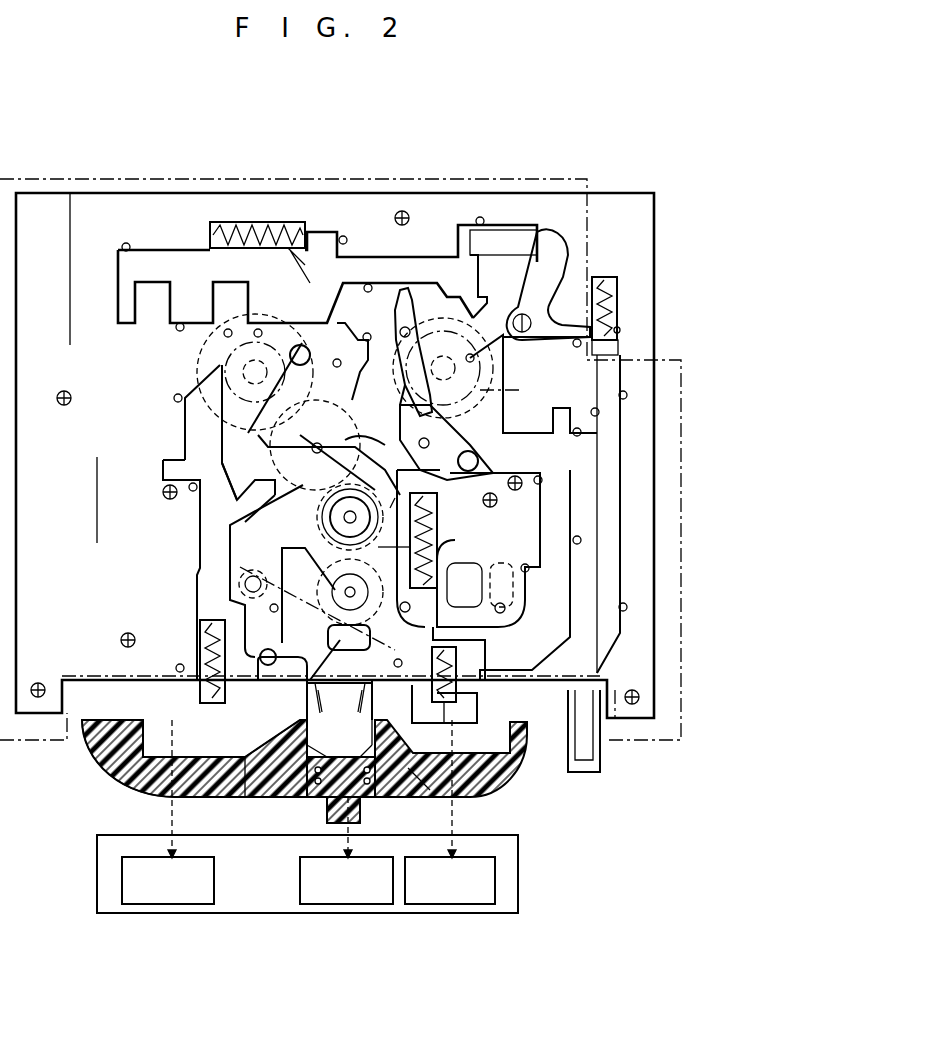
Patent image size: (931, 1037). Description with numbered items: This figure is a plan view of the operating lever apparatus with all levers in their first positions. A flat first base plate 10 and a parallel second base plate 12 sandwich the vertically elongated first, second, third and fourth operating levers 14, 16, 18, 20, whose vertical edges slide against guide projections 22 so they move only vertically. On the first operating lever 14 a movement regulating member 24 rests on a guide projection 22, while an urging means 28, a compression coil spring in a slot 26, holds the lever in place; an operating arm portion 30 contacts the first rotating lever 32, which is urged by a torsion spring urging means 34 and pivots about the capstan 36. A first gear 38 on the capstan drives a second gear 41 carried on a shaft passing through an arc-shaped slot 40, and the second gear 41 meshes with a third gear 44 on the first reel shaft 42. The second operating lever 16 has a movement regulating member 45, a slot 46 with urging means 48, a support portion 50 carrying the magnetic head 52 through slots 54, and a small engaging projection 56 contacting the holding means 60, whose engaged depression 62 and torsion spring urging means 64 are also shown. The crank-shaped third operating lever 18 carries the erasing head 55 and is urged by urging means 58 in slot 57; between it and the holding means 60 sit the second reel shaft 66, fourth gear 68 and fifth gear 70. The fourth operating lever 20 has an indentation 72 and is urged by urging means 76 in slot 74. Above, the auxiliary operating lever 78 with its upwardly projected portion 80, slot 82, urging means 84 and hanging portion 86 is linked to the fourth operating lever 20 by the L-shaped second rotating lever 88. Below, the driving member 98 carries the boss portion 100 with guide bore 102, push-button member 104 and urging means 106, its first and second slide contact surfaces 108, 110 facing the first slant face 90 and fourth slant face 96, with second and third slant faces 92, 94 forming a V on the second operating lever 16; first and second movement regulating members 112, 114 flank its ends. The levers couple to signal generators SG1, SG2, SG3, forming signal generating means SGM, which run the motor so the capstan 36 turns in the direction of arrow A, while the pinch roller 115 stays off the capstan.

The first base plate 10 is at (645, 240).
The second base plate 12 is at (548, 190).
The first operating lever 14 is at (185, 703).
The second operating lever 16 is at (306, 692).
The third operating lever 18 is at (472, 718).
The fourth operating lever 20 is at (578, 700).
The guide projections 22 is at (130, 246).
The movement regulating member 24 is at (160, 462).
The slot 26 is at (251, 621).
The urging means 28 is at (200, 628).
The operating arm portion 30 is at (266, 571).
The first rotating lever 32 is at (230, 470).
The urging means 34 is at (272, 416).
The capstan 36 is at (342, 520).
The first gear 38 is at (343, 462).
The slot 40 is at (315, 445).
The second gear 41 is at (272, 530).
The first reel shaft 42 is at (210, 368).
The third gear 44 is at (220, 366).
The movement regulating member 45 is at (348, 351).
The slot 46 is at (400, 548).
The urging means 48 is at (437, 540).
The support portion 50 is at (487, 563).
The magnetic head 52 is at (475, 610).
The slots 54 is at (522, 635).
The erasing head 55 is at (441, 575).
The small engaging projection 56 is at (402, 396).
The slot 57 is at (456, 668).
The urging means 58 is at (458, 688).
The holding means 60 is at (440, 340).
The engaged depression 62 is at (402, 372).
The urging means 64 is at (467, 483).
The second reel shaft 66 is at (503, 390).
The fourth gear 68 is at (503, 358).
The fifth gear 70 is at (398, 428).
The indentation 72 is at (615, 490).
The slot 74 is at (618, 330).
The urging means 76 is at (612, 295).
The auxiliary operating lever 78 is at (430, 270).
The upwardly projected portion 80 is at (328, 243).
The slot 82 is at (299, 273).
The urging means 84 is at (255, 238).
The hanging portion 86 is at (475, 290).
The second rotating lever 88 is at (545, 288).
The first slant face 90 is at (270, 738).
The second slant face 92 is at (324, 709).
The third slant face 94 is at (354, 709).
The fourth slant face 96 is at (415, 790).
The driving member 98 is at (478, 795).
The boss portion 100 is at (312, 694).
The guide bore 102 is at (362, 795).
The push-button member 104 is at (348, 770).
The urging means 106 is at (306, 796).
The first slide contact surface 108 is at (256, 795).
The second slide contact surface 110 is at (436, 706).
The first movement regulating member 112 is at (522, 742).
The second movement regulating member 114 is at (108, 728).
The pinch roller 115 is at (317, 597).
The arrow A is at (401, 489).
The signal generating means SGM is at (515, 860).
The first signal generator SG1 is at (150, 905).
The second signal generator SG2 is at (348, 905).
The third signal generator SG3 is at (452, 905).